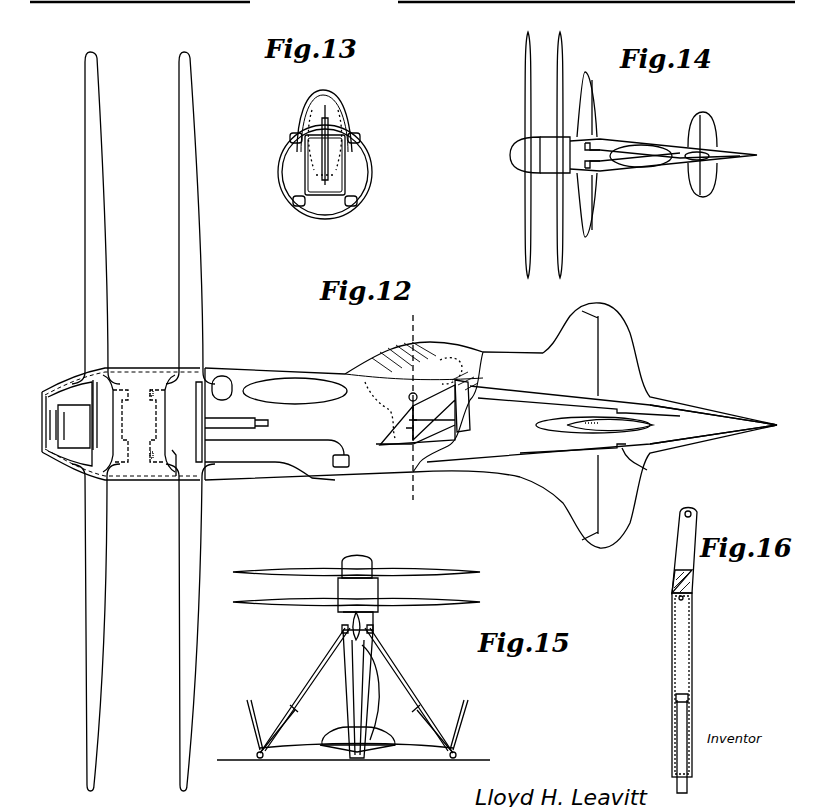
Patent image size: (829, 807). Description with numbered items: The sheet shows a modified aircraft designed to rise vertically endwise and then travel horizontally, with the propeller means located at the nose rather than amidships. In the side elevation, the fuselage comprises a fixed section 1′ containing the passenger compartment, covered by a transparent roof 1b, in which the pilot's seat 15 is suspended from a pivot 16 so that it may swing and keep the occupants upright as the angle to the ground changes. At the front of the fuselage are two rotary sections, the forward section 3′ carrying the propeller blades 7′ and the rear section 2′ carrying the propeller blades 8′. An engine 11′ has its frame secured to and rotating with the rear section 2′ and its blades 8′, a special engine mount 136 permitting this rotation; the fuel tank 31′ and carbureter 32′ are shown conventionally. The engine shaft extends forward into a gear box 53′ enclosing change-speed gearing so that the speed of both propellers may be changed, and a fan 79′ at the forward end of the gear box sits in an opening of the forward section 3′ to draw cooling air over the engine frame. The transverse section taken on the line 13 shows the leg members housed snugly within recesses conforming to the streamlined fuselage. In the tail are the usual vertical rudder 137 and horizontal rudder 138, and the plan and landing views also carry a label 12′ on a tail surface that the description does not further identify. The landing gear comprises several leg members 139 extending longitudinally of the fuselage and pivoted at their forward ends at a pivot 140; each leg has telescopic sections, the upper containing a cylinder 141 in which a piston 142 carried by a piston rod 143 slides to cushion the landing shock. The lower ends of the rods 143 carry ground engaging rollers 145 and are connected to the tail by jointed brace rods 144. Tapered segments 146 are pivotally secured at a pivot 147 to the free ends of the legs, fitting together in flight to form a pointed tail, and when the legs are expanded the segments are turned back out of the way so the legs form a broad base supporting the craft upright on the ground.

In FIG. 12, the fixed section 1′ is at (272, 372).
In FIG. 13, the fixed section 1′ is at (372, 180).
In FIG. 12, the transparent roof 1b is at (452, 345).
In FIG. 14, the transparent roof 1b is at (644, 160).
In FIG. 12, the rear rotary section 2′ is at (150, 365).
In FIG. 14, the rear rotary section 2′ is at (554, 166).
In FIG. 12, the forward rotary section 3′ is at (60, 380).
In FIG. 14, the forward rotary section 3′ is at (520, 150).
In FIG. 15, the forward rotary section 3′ is at (358, 592).
In FIG. 12, the propeller blades 7′ is at (98, 228).
In FIG. 14, the propeller blades 7′ is at (526, 78).
In FIG. 15, the propeller blades 7′ is at (435, 568).
In FIG. 12, the propeller blades 8′ is at (190, 266).
In FIG. 14, the propeller blades 8′ is at (563, 68).
In FIG. 15, the propeller blades 8′ is at (425, 610).
In FIG. 12, the engine 11′ is at (164, 470).
In FIG. 14, the vertical fin 12′ is at (590, 125).
In FIG. 15, the vertical fin 12′ is at (366, 630).
In FIG. 12, the section line 13 is at (405, 321).
In FIG. 12, the seat 15 is at (413, 443).
In FIG. 12, the pivot 16 is at (408, 397).
In FIG. 13, the pivot 16 is at (350, 114).
In FIG. 12, the fuel tank 31′ is at (279, 390).
In FIG. 12, the carbureter 32′ is at (332, 461).
In FIG. 12, the gear box 53′ is at (76, 440).
In FIG. 12, the fan 79′ is at (52, 446).
In FIG. 12, the engine mount 136 is at (280, 426).
In FIG. 12, the vertical rudder 137 is at (628, 368).
In FIG. 14, the vertical rudder 137 is at (700, 130).
In FIG. 12, the horizontal rudder 138 is at (578, 430).
In FIG. 12, the leg members 139 is at (507, 450).
In FIG. 13, the leg members 139 is at (290, 136).
In FIG. 14, the leg members 139 is at (636, 140).
In FIG. 15, the leg members 139 is at (392, 664).
In FIG. 16, the leg members 139 is at (676, 566).
In FIG. 14, the pivot 140 is at (590, 166).
In FIG. 15, the pivot 140 is at (342, 628).
In FIG. 16, the pivot 140 is at (694, 512).
In FIG. 16, the cylinder 141 is at (682, 676).
In FIG. 16, the piston 142 is at (690, 700).
In FIG. 15, the piston rod 143 is at (428, 720).
In FIG. 16, the piston rod 143 is at (677, 776).
In FIG. 15, the jointed brace rods 144 is at (416, 746).
In FIG. 15, the ground engaging rollers 145 is at (460, 755).
In FIG. 12, the tapered segments 146 is at (692, 430).
In FIG. 15, the tapered segments 146 is at (249, 738).
In FIG. 12, the pivot 147 is at (645, 455).
In FIG. 15, the pivot 147 is at (452, 758).